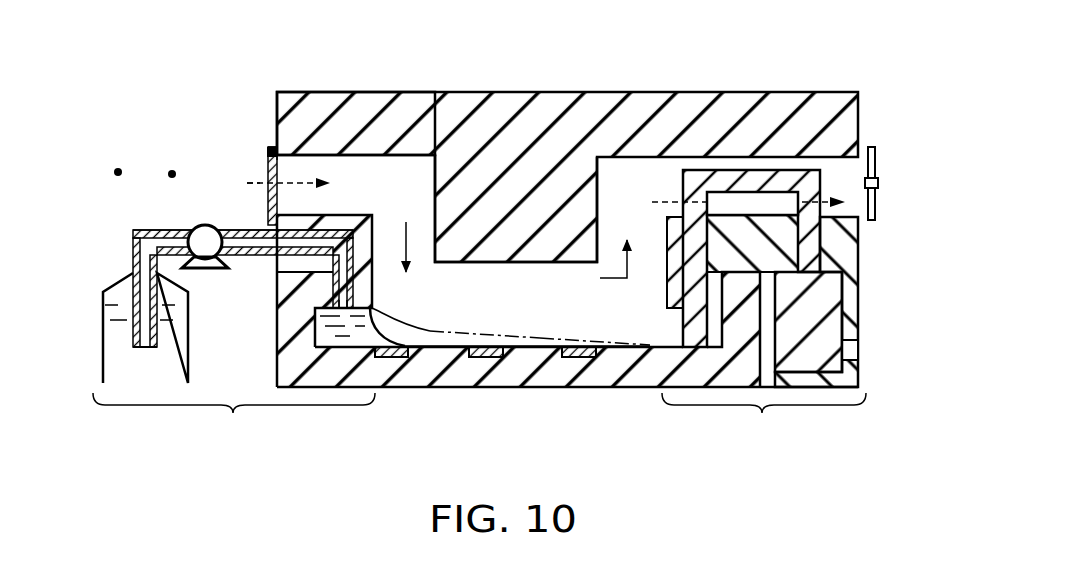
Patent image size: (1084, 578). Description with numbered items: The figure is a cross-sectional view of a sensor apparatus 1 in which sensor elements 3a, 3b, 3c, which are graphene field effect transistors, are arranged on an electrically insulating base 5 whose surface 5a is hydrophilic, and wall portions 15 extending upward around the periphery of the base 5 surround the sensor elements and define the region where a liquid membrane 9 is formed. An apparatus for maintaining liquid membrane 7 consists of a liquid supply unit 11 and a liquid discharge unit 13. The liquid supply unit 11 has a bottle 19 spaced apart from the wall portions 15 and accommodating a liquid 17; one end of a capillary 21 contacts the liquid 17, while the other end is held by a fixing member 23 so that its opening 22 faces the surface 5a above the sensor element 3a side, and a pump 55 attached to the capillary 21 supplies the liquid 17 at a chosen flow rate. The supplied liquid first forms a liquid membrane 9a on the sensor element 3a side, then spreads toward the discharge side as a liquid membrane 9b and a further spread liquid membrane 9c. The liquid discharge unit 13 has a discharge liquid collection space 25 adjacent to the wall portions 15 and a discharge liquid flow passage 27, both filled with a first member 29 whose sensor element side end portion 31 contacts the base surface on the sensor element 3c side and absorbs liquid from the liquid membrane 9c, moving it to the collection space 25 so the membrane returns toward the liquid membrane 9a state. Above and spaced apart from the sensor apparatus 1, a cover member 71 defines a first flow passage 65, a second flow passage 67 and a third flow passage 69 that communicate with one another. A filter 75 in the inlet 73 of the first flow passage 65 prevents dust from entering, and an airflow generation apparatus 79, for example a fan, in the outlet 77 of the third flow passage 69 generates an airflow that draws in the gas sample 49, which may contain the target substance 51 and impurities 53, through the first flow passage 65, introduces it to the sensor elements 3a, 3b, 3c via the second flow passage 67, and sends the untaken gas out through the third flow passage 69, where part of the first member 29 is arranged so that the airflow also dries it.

The sensor apparatus 1 is at (169, 64).
The sensor element 3a is at (392, 358).
The sensor element 3b is at (487, 358).
The sensor element 3c is at (578, 358).
The base 5 is at (641, 378).
The surface of the base 5a is at (648, 346).
The apparatus for maintaining liquid membrane 7 is at (479, 422).
The liquid membrane 9 is at (350, 335).
The liquid membrane 9a is at (388, 330).
The liquid membrane 9b is at (445, 330).
The liquid membrane 9c is at (555, 334).
The liquid supply unit 11 is at (86, 290).
The liquid discharge unit 13 is at (906, 253).
The wall portions 15 is at (278, 298).
The liquid 17 is at (147, 380).
The first container (bottle) 19 is at (113, 387).
The capillary 21 is at (133, 236).
The opening 22 is at (336, 303).
The fixing member 23 is at (278, 262).
The discharge liquid collection space 25 is at (846, 300).
The discharge liquid flow passage 27 is at (803, 252).
The first member 29 is at (827, 338).
The sensor element side end portion 31 is at (694, 348).
The gas sample 49 is at (164, 154).
The target substance 51 is at (118, 170).
The impurities 53 is at (231, 168).
The pump 55 is at (205, 270).
The first flow passage 65 is at (360, 176).
The second flow passage 67 is at (527, 272).
The third flow passage 69 is at (760, 166).
The cover member 71 is at (614, 100).
The inlet 73 is at (276, 178).
The filter 75 is at (268, 210).
The outlet 77 is at (856, 168).
The airflow generation apparatus 79 is at (885, 166).